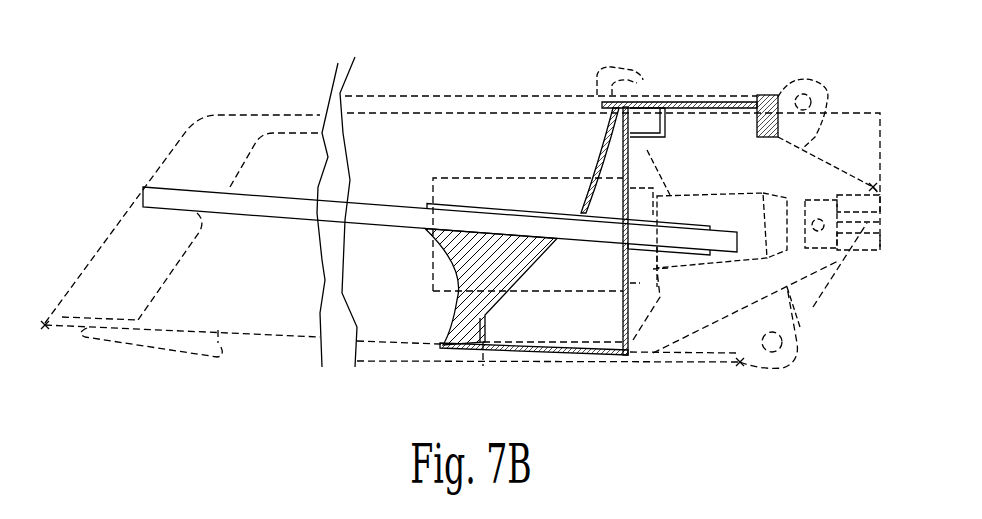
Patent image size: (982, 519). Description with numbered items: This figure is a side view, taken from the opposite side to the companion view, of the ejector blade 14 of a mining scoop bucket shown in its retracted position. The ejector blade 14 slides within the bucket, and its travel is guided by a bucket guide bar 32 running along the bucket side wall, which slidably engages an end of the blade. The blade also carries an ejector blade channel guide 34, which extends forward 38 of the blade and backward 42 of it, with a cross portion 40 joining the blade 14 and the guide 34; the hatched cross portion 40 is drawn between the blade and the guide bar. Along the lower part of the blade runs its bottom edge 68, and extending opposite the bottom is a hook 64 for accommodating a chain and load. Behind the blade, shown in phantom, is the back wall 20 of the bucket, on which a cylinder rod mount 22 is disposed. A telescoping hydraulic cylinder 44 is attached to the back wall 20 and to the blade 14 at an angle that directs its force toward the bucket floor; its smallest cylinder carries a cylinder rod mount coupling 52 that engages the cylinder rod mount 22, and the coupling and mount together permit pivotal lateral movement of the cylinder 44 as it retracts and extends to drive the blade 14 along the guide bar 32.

The ejector blade 14 is at (598, 167).
The back wall 20 is at (810, 307).
The cylinder rod mount 22 is at (862, 230).
The bucket guide bar 32 is at (372, 227).
The ejector blade channel guide 34 is at (657, 217).
The forward extension of the channel guide 38 is at (700, 256).
The cross portion 40 is at (502, 281).
The backward extension of the channel guide 42 is at (645, 253).
The telescoping hydraulic cylinder 44 is at (762, 194).
The cylinder rod mount coupling 52 is at (866, 226).
The hook 64 is at (620, 63).
The bottom edge 68 is at (443, 349).